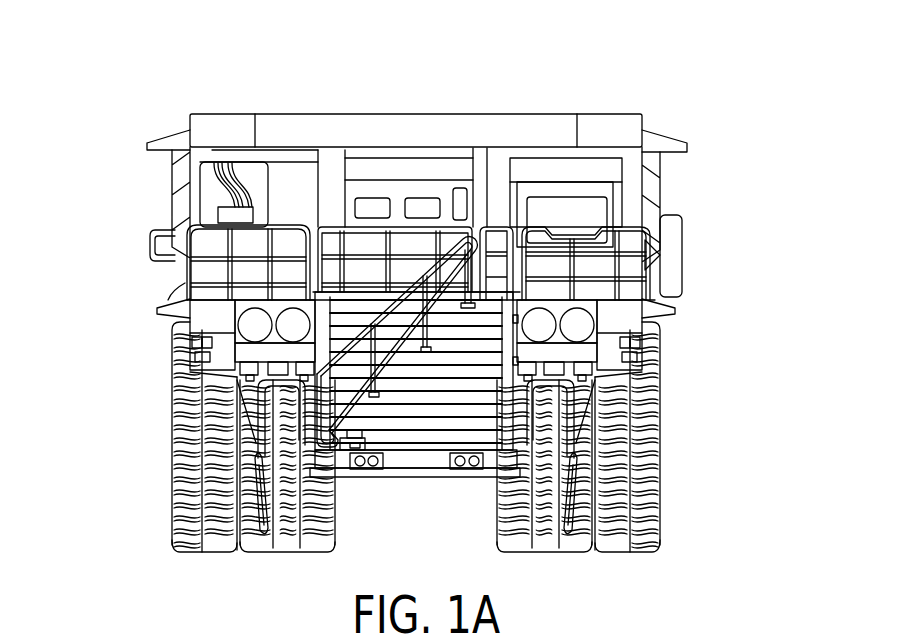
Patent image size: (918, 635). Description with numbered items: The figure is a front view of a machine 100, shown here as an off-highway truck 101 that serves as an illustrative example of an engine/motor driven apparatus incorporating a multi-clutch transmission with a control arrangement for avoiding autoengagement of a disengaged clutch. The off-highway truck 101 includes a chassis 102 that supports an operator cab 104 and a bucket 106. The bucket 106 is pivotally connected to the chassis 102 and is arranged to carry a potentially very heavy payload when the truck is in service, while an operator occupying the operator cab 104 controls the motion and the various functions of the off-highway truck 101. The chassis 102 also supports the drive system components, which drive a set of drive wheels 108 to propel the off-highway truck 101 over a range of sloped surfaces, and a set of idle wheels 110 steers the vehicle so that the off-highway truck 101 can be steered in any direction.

The machine 100 is at (627, 83).
The off-highway truck 101 is at (131, 297).
The chassis 102 is at (383, 473).
The operator cab 104 is at (575, 217).
The bucket 106 is at (284, 121).
The drive wheels 108 is at (185, 443).
The idle wheels 110 is at (602, 457).